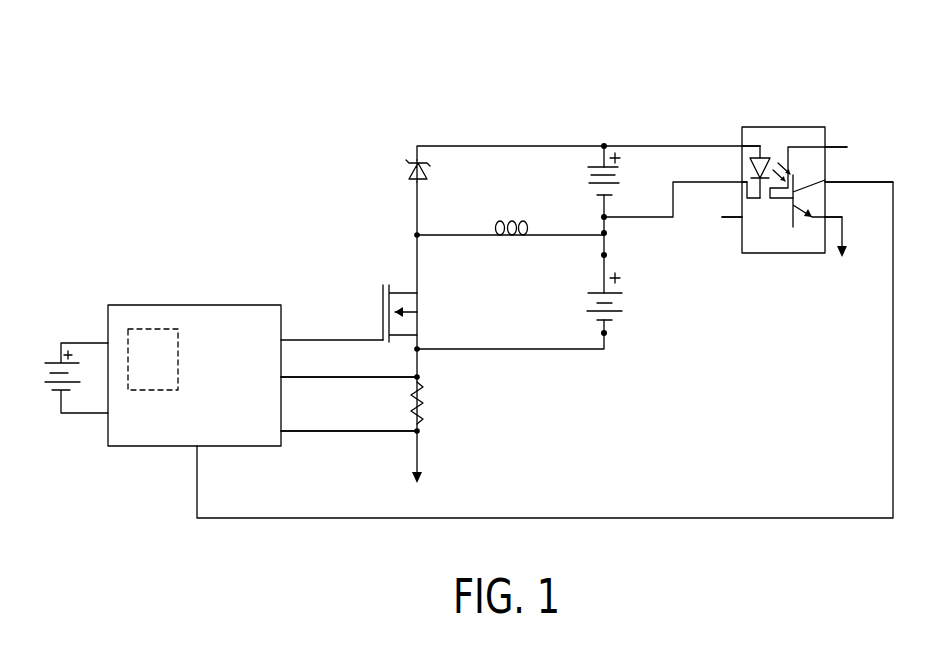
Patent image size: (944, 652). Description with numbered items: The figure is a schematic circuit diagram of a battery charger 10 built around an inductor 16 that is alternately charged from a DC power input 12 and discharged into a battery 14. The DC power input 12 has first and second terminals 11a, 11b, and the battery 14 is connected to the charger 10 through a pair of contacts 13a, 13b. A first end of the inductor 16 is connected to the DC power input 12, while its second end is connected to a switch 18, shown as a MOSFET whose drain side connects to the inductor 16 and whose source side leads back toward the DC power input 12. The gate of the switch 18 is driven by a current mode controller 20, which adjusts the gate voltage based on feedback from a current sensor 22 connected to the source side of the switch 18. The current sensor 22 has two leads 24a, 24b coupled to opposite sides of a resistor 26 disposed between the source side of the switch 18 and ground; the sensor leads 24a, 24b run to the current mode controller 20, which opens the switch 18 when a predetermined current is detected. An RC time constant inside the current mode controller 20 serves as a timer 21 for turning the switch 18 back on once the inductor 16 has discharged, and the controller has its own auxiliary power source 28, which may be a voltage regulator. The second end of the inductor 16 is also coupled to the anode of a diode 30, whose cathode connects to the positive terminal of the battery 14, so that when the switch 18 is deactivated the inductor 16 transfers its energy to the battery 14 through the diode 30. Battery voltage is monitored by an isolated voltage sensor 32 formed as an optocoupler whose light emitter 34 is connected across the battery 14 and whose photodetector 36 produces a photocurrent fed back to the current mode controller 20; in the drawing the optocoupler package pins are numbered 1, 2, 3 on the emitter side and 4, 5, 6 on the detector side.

The charger 10 is at (517, 106).
The first terminal 11a is at (608, 257).
The second terminal 11b is at (608, 335).
The DC power input 12 is at (622, 305).
The contact 13a is at (605, 144).
The contact 13b is at (608, 235).
The battery 14 is at (588, 175).
The inductor 16 is at (513, 238).
The switch 18 is at (383, 295).
The current mode controller 20 is at (182, 305).
The timer 21 is at (140, 330).
The current sensor 22 is at (463, 415).
The sensor lead 24a is at (328, 377).
The sensor lead 24b is at (362, 432).
The resistor 26 is at (422, 393).
The auxiliary power source 28 is at (51, 362).
The diode 30 is at (410, 178).
The isolated voltage sensor 32 is at (807, 127).
The light emitter 34 is at (763, 152).
The photodetector 36 is at (795, 227).
The optocoupler pin 1 is at (743, 133).
The optocoupler pin 2 is at (736, 167).
The optocoupler pin 3 is at (732, 204).
The optocoupler pin 4 is at (836, 207).
The optocoupler pin 5 is at (859, 167).
The optocoupler pin 6 is at (836, 132).